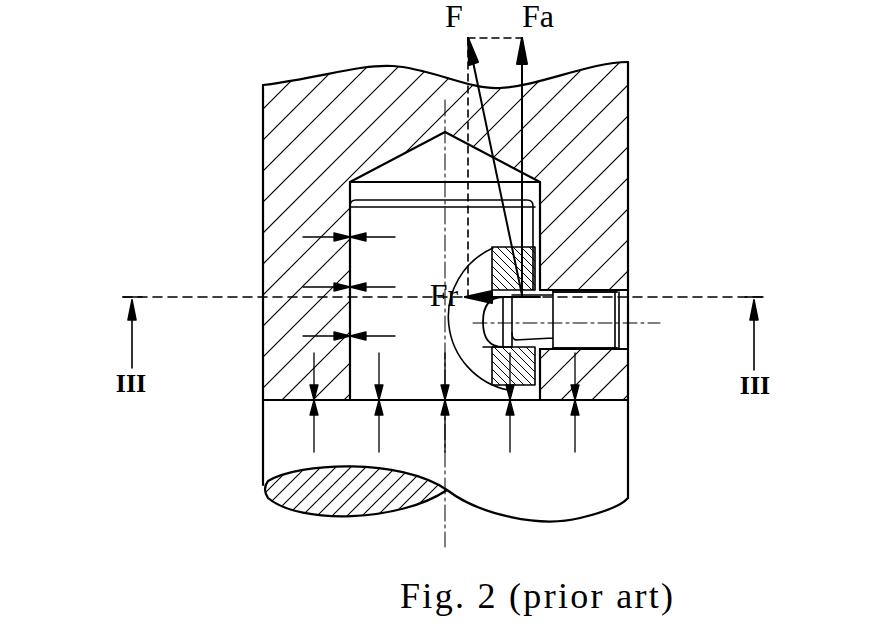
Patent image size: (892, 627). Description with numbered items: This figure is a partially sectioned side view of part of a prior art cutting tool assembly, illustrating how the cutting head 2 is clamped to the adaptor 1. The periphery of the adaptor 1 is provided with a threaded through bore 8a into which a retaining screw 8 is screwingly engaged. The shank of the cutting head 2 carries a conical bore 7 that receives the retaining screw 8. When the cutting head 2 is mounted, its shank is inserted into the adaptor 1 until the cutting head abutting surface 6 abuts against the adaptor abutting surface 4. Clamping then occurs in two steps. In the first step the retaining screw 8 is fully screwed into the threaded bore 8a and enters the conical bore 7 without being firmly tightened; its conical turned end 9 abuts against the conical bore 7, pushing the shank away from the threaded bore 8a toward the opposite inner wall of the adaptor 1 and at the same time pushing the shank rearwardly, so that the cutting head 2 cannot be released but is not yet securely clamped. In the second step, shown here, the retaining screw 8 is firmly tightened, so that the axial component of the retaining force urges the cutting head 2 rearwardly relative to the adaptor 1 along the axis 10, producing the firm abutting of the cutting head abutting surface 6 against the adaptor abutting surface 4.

The adaptor 1 is at (303, 205).
The cutting head 2 is at (572, 477).
The adaptor abutting surface 4 is at (290, 400).
The cutting head abutting surface 6 is at (277, 400).
The conical bore 7 is at (600, 326).
The retaining screw 8 is at (580, 302).
The threaded through bore 8a is at (632, 342).
The conical turned end 9 is at (528, 303).
The axis 10 is at (442, 532).